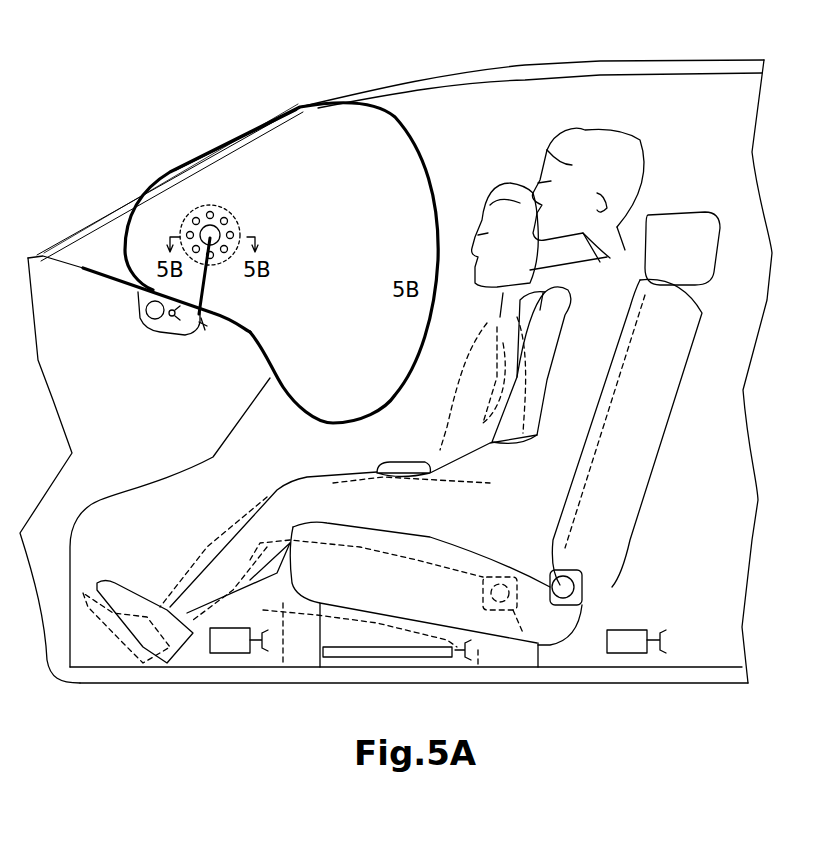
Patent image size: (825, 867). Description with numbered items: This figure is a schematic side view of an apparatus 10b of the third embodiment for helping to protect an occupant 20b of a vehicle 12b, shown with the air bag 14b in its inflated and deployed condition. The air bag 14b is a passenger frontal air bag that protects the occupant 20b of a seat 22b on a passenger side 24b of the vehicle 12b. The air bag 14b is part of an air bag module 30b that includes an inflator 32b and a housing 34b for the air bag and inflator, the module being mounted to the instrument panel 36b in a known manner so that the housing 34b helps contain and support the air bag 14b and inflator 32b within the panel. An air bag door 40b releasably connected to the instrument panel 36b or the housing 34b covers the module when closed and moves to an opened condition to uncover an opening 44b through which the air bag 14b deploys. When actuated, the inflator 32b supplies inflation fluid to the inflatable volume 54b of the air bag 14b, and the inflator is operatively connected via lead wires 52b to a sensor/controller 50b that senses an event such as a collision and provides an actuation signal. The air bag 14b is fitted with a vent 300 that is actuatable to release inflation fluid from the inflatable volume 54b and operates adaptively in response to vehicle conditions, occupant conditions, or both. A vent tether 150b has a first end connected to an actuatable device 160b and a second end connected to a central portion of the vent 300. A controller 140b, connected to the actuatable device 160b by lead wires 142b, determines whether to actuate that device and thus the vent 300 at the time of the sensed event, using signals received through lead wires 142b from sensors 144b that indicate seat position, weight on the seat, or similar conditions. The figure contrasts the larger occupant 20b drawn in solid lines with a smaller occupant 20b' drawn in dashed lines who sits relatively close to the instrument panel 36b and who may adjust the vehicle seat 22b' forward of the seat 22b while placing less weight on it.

The vehicle 12b is at (193, 84).
The passenger side 24b is at (248, 116).
The air bag 14b is at (372, 137).
The apparatus 10b is at (189, 140).
The air bag door 40b is at (98, 280).
The opening 44b is at (146, 272).
The instrument panel 36b is at (63, 280).
The inflatable volume 54b is at (342, 164).
The vent 300 is at (274, 210).
The occupant 20b is at (386, 377).
The smaller occupant 20b' is at (364, 391).
The housing 34b is at (143, 308).
The air bag module 30b is at (135, 323).
The inflator 32b is at (145, 321).
The vent tether 150b is at (209, 277).
The actuatable device 160b is at (207, 275).
The seat 22b is at (491, 439).
The forward-adjusted vehicle seat 22b' is at (652, 476).
The controller 140b is at (228, 636).
The lead wires 142b is at (255, 648).
The sensors 144b is at (400, 657).
The sensor/controller 50b is at (628, 645).
The lead wires 52b is at (653, 653).